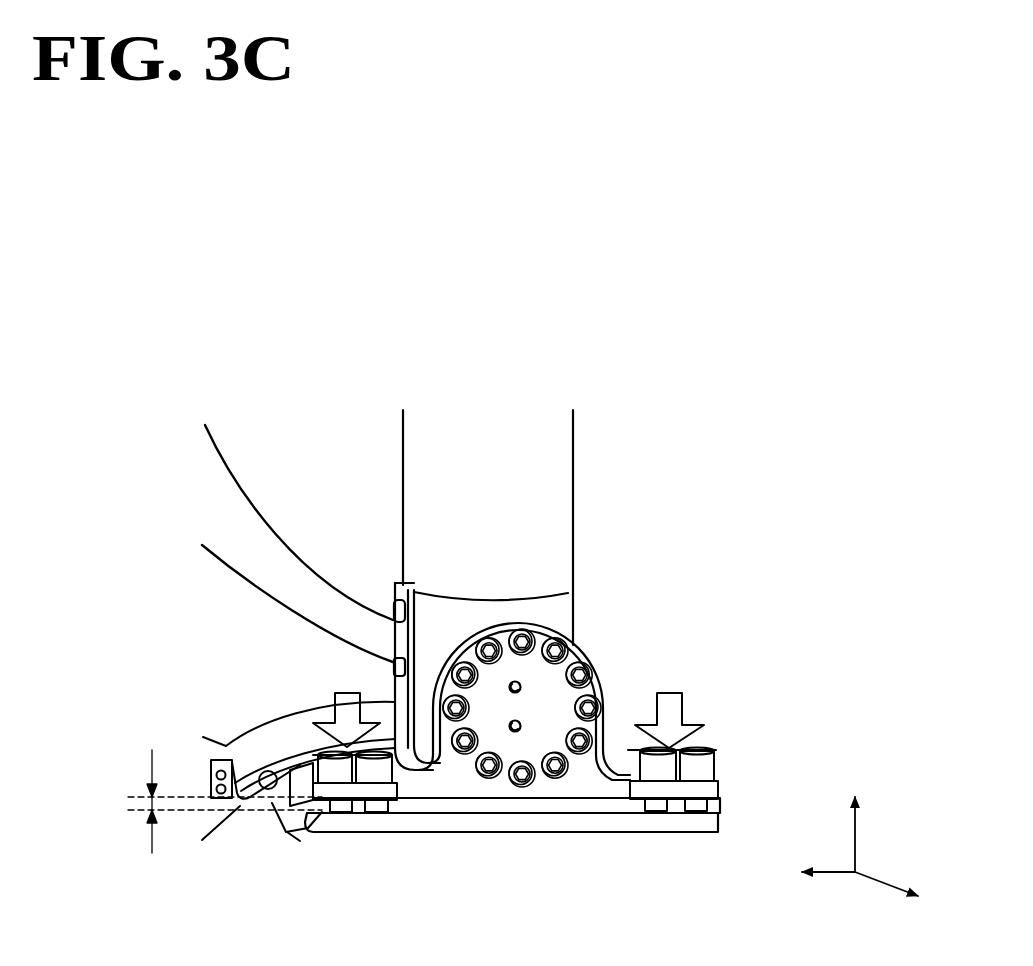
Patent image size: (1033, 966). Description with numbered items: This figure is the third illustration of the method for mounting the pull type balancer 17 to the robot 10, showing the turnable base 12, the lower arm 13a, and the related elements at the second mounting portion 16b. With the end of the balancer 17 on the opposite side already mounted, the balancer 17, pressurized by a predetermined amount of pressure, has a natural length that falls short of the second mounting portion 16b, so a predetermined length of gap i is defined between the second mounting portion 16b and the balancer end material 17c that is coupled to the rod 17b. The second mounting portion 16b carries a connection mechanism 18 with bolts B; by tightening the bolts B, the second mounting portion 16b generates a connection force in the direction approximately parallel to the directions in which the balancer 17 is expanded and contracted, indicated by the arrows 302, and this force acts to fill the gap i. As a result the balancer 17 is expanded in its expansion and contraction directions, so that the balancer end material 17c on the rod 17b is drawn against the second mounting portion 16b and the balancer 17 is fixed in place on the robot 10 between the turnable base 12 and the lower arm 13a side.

The robot 10 is at (768, 367).
The turnable base 12 is at (270, 830).
The lower arm 13a is at (273, 465).
The second mounting portion 16b is at (563, 832).
The balancer 17 is at (610, 406).
The rod 17b is at (557, 481).
The balancer end material 17c is at (590, 651).
The connection mechanism 18 is at (736, 805).
The arrows 302 is at (341, 691).
The bolts B is at (306, 742).
The gap i is at (150, 803).